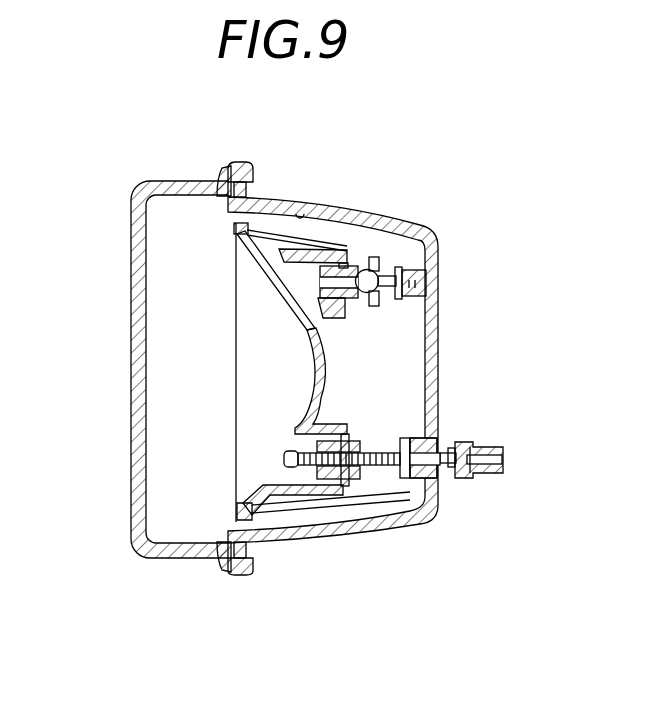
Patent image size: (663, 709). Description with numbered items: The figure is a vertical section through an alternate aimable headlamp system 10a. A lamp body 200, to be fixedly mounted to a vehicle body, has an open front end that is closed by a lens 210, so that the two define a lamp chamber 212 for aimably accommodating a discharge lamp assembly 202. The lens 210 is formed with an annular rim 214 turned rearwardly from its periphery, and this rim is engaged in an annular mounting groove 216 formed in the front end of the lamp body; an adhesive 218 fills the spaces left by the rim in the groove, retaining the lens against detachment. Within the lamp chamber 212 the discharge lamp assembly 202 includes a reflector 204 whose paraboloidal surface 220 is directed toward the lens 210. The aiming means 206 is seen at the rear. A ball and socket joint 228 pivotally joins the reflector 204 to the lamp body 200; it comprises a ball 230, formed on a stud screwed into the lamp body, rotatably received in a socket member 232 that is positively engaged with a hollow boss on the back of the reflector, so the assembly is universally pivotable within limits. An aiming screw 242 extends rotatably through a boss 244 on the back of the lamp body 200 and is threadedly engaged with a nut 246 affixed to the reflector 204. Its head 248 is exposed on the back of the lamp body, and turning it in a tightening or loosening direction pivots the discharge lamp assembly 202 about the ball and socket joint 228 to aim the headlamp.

The aimable headlamp system 10a is at (86, 180).
The lamp body 200 is at (351, 331).
The discharge lamp assembly 202 is at (208, 295).
The reflector 204 is at (324, 372).
The aiming means 206 is at (472, 510).
The lens 210 is at (144, 375).
The lamp chamber 212 is at (298, 201).
The annular rim 214 is at (150, 181).
The annular mounting groove 216 is at (222, 176).
The adhesive 218 is at (240, 162).
The paraboloidal surface 220 is at (311, 360).
The ball and socket joint 228 is at (405, 244).
The ball 230 is at (367, 294).
The socket member 232 is at (356, 265).
The aiming screw 242 is at (374, 448).
The boss 244 is at (415, 516).
The nut 246 is at (349, 443).
The head 248 is at (505, 461).